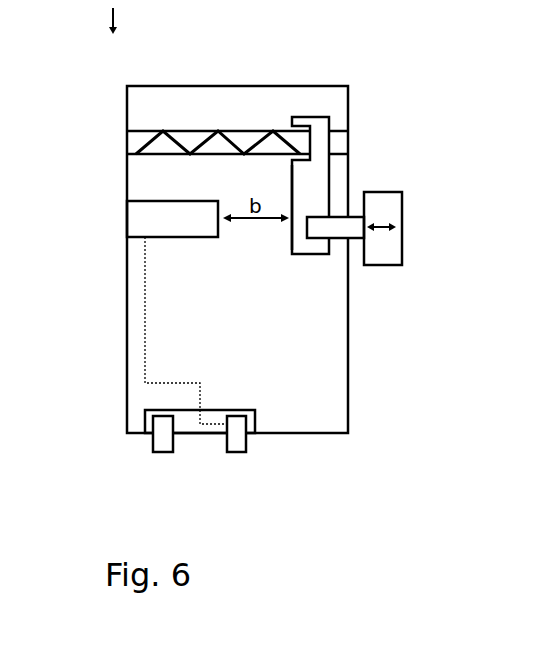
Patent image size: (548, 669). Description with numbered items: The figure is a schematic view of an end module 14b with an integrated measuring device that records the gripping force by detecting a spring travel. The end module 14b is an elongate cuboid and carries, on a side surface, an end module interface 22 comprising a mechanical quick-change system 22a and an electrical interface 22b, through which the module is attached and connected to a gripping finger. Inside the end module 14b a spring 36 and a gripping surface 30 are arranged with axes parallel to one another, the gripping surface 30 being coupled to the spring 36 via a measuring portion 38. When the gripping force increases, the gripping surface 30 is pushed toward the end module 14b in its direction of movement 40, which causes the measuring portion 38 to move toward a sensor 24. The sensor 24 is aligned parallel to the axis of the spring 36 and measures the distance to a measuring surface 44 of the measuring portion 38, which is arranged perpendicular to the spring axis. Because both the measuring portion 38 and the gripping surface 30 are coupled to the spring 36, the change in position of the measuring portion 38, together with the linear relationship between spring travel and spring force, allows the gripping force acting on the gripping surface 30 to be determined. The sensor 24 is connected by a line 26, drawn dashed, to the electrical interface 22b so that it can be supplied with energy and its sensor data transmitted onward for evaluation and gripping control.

The end module 14b is at (93, 20).
The spring 36 is at (218, 131).
The measuring portion 38 is at (320, 187).
The direction of movement 40 is at (377, 221).
The gripping surface 30 is at (393, 247).
The measuring surface 44 is at (292, 240).
The sensor 24 is at (138, 218).
The line 26 is at (145, 357).
The end module interface 22 is at (158, 410).
The mechanical quick-change system 22a is at (165, 452).
The electrical interface 22b is at (236, 452).